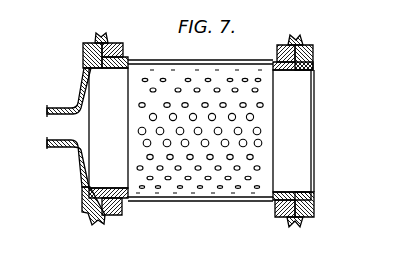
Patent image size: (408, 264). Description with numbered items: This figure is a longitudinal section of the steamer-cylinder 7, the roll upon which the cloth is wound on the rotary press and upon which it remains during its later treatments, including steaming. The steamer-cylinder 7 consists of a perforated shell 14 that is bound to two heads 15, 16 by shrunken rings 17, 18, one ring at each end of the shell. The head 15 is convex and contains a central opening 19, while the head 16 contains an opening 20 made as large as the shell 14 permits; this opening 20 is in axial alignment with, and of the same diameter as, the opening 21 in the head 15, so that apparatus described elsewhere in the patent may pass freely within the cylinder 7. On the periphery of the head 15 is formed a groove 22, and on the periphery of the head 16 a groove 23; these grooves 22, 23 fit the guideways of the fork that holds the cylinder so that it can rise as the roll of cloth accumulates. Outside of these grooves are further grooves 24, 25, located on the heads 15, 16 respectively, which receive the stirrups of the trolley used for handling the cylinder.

The steamer-cylinder 7 is at (147, 118).
The perforated shell 14 is at (221, 205).
The head 15 is at (83, 72).
The head 16 is at (314, 63).
The shrunken ring 17 is at (114, 46).
The shrunken ring 18 is at (288, 45).
The central opening 19 is at (48, 129).
The opening 20 is at (293, 131).
The opening 21 is at (108, 128).
The groove 22 is at (97, 224).
The groove 23 is at (296, 227).
The groove 24 is at (88, 217).
The groove 25 is at (309, 220).